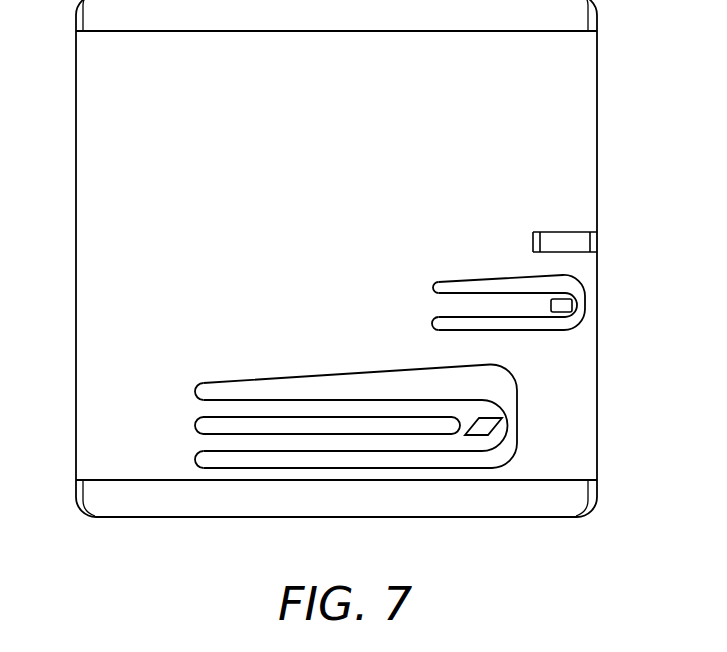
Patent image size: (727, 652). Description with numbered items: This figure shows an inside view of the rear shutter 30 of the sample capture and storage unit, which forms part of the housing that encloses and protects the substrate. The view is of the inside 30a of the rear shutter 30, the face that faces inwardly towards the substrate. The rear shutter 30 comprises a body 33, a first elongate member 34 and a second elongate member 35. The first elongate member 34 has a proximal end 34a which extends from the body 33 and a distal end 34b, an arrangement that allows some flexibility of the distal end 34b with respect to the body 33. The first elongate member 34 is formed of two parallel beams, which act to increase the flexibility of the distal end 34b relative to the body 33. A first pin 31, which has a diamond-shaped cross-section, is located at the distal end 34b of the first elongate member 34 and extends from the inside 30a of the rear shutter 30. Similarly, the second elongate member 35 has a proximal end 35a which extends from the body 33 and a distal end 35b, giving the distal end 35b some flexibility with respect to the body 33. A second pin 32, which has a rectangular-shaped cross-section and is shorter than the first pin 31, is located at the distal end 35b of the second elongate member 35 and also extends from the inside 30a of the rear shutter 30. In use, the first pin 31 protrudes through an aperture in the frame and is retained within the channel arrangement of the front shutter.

The rear shutter 30 is at (597, 89).
The inside 30a is at (578, 141).
The body 33 is at (82, 215).
The second pin 32 is at (572, 305).
The second elongate member 35 is at (510, 308).
The proximal end 35a is at (440, 305).
The distal end 35b is at (562, 318).
The first elongate member 34 is at (338, 443).
The proximal end 34a is at (196, 445).
The distal end 34b is at (477, 443).
The first pin 31 is at (490, 427).